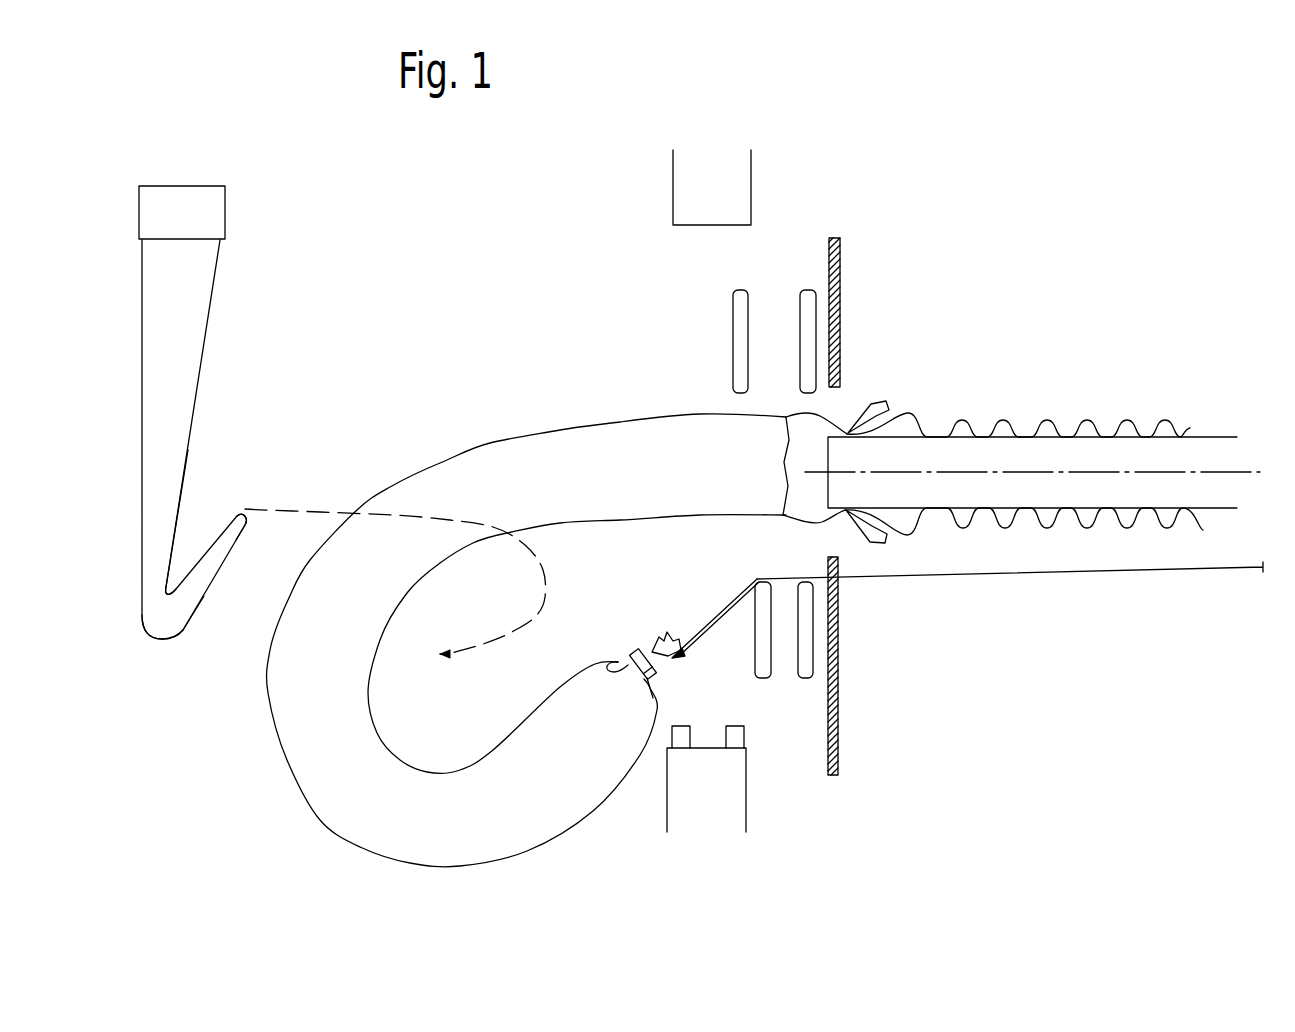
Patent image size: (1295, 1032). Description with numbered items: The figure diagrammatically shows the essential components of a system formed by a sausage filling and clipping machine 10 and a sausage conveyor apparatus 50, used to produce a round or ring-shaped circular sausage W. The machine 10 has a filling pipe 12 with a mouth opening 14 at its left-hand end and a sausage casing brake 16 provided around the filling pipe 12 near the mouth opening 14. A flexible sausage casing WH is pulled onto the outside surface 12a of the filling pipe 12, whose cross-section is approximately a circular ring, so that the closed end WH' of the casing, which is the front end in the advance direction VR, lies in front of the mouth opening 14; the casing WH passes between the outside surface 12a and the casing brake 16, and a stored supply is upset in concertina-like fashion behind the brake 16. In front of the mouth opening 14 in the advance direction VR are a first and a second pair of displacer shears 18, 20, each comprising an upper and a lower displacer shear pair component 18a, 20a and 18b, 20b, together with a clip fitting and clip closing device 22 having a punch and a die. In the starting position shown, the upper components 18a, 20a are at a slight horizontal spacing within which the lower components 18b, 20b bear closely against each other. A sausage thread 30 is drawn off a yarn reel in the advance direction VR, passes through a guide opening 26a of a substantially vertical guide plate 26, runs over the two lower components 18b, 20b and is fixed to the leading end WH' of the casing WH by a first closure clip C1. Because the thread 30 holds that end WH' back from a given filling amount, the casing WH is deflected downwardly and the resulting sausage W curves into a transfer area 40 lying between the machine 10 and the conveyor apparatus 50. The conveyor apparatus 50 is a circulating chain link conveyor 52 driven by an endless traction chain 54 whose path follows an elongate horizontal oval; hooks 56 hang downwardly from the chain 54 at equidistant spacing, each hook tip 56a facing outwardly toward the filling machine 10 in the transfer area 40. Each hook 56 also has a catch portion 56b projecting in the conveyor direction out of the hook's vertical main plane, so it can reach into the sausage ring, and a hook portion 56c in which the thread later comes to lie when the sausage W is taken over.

The sausage filling and clipping machine 10 is at (1063, 356).
The filling pipe 12 is at (1075, 460).
The outside surface of the filling pipe 12a is at (1213, 437).
The mouth opening 14 is at (823, 452).
The sausage casing brake 16 is at (878, 398).
The first pair of displacer shears 18 is at (803, 290).
The upper displacer shear pair component of the first pair 18a is at (808, 337).
The lower displacer shear pair component of the first pair 18b is at (808, 677).
The second pair of displacer shears 20 is at (733, 305).
The upper displacer shear pair component of the second pair 20a is at (742, 360).
The lower displacer shear pair component of the second pair 20b is at (763, 677).
The clip fitting and clip closing device 22 is at (738, 172).
The guide plate 26 is at (838, 743).
The guide opening 26a is at (835, 597).
The sausage thread 30 is at (1198, 573).
The transfer area 40 is at (521, 893).
The sausage conveyor apparatus 50 is at (330, 365).
The chain link conveyor 52 is at (142, 383).
The endless traction chain 54 is at (178, 198).
The hook 56 is at (190, 415).
The hook tip 56a is at (245, 505).
The catch portion 56b is at (158, 642).
The hook portion 56c is at (216, 578).
The round or ring-shaped circular sausage W is at (562, 492).
The flexible sausage casing WH is at (859, 614).
The closed end of the sausage casing WH' is at (636, 609).
The first closure clip C1 is at (655, 672).
The advance direction VR is at (1050, 375).